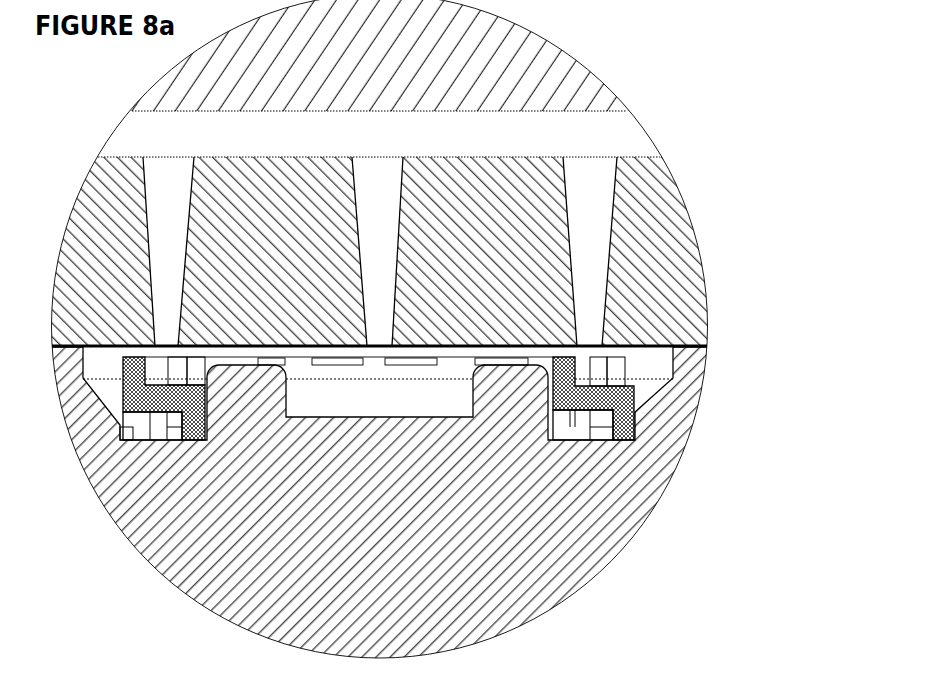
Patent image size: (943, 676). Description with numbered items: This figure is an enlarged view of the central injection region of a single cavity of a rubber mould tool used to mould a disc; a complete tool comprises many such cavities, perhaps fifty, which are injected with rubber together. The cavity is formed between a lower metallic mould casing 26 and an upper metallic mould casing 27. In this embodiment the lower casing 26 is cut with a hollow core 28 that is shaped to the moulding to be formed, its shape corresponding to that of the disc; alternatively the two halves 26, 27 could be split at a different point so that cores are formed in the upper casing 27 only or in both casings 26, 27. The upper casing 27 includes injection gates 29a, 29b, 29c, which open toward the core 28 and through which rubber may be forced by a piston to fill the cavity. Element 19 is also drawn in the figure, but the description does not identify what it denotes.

The seal assembly 19 is at (618, 406).
The lower metallic mould casing 26 is at (636, 500).
The upper metallic mould casing 27 is at (672, 240).
The hollow core 28 is at (653, 368).
The injection gate 29a is at (593, 184).
The injection gate 29b is at (380, 185).
The injection gate 29c is at (163, 190).